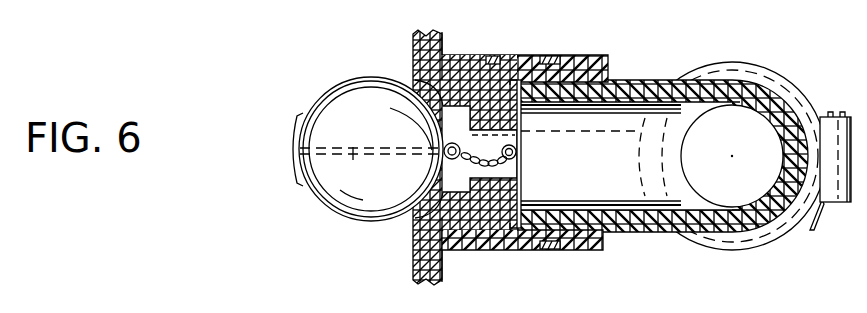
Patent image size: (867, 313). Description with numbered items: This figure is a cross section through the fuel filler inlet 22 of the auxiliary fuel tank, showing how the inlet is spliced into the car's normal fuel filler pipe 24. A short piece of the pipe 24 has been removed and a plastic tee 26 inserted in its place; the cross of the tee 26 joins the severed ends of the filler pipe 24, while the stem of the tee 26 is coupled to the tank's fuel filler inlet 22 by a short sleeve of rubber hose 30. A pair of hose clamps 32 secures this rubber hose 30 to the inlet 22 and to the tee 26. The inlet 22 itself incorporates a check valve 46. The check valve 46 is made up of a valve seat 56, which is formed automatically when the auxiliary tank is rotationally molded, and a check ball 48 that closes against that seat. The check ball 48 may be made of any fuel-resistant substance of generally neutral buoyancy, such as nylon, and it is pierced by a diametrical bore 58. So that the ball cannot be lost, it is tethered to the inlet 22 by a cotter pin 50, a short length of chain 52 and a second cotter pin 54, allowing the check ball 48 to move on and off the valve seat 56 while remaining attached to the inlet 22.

The fuel filler inlet 22 is at (484, 102).
The fuel filler pipe 24 is at (769, 236).
The plastic tee 26 is at (637, 226).
The sleeve of rubber hose 30 is at (610, 62).
The hose clamps 32 is at (551, 58).
The check valve 46 is at (389, 54).
The check ball 48 is at (358, 218).
The cotter pin 50 is at (522, 136).
The chain 52 is at (513, 163).
The second cotter pin 54 is at (296, 181).
The valve seat 56 is at (399, 98).
The diametrical bore 58 is at (358, 153).